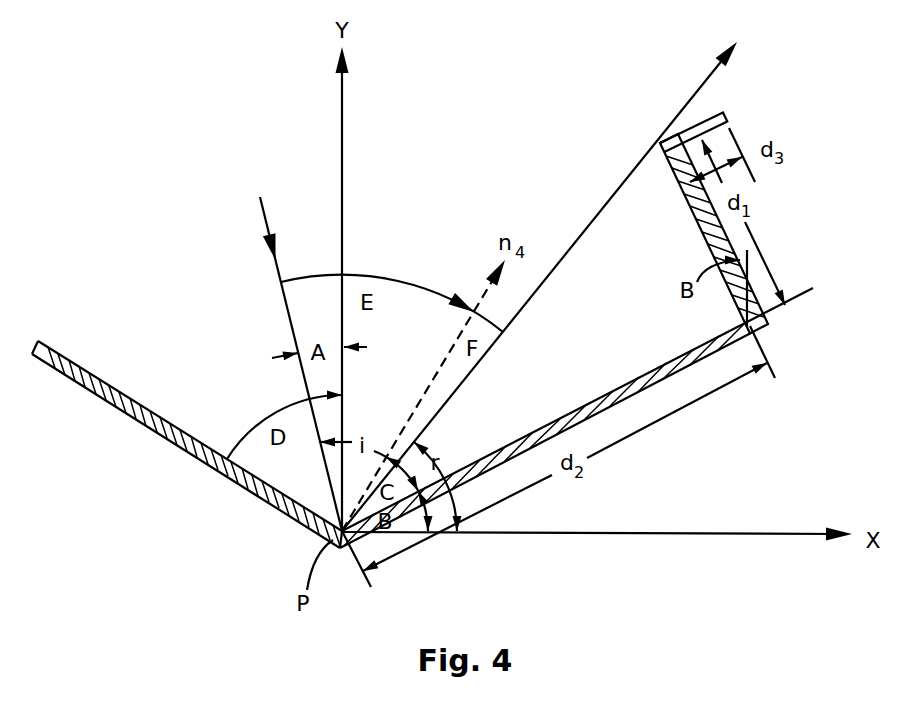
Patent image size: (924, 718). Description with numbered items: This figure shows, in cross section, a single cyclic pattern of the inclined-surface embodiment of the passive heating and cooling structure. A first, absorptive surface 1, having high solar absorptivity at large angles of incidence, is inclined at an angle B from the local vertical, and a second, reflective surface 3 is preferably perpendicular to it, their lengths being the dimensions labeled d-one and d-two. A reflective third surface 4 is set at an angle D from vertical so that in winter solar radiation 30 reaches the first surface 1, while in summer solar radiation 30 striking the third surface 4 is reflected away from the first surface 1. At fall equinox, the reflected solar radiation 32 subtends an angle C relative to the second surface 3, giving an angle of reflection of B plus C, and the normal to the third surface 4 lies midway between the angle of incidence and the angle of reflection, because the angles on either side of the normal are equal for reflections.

The first absorptive surface 1 is at (707, 238).
The second reflective surface 3 is at (598, 398).
The third surface 4 is at (217, 471).
The solar radiation 30 is at (265, 218).
The reflected solar radiation 32 is at (690, 100).